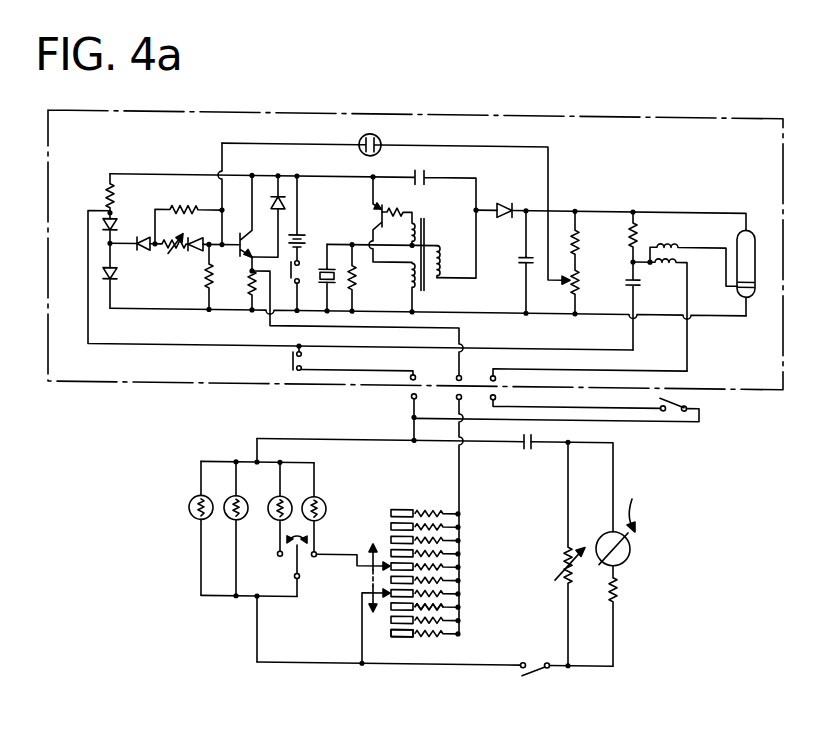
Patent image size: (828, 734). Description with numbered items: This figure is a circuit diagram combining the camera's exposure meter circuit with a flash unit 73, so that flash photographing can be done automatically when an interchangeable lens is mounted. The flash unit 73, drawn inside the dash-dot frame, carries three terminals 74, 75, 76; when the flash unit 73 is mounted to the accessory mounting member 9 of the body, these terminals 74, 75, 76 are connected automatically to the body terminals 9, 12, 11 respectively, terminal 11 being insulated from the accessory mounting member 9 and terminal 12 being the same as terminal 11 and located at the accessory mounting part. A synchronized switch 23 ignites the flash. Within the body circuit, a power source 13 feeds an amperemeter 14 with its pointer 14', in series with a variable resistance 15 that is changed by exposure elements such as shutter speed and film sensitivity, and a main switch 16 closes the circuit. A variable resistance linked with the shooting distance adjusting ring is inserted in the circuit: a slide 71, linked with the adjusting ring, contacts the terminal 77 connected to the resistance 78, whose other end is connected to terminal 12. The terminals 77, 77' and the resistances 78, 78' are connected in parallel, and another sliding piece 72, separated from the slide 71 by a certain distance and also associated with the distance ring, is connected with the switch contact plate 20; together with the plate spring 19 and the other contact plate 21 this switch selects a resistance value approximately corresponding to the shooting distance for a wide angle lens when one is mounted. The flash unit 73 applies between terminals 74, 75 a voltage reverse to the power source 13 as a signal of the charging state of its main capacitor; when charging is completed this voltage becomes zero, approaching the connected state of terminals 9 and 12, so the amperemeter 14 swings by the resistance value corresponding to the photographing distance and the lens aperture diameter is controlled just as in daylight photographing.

The flash unit 73 is at (98, 381).
The terminal of flash unit 74 is at (410, 378).
The terminal of flash unit 75 is at (456, 371).
The terminal of flash unit 76 is at (490, 373).
The accessory mounting member 9 is at (412, 398).
The terminal 12 is at (456, 393).
The terminal 11 is at (496, 392).
The synchronized switch 23 is at (690, 399).
The power source 13 is at (529, 444).
The contact plate for switch 21 is at (278, 548).
The contact plate for switch 20 is at (316, 548).
The plate spring for switch 19 is at (296, 569).
The sliding piece 72 is at (360, 566).
The slide 71 is at (378, 595).
The terminal 77 is at (389, 587).
The terminal 77' is at (418, 648).
The resistance 78 is at (459, 577).
The resistance 78' is at (462, 603).
The variable resistance 15 is at (562, 548).
The amperemeter 14 is at (639, 600).
The pointer 14' is at (638, 505).
The main switch 16 is at (536, 668).